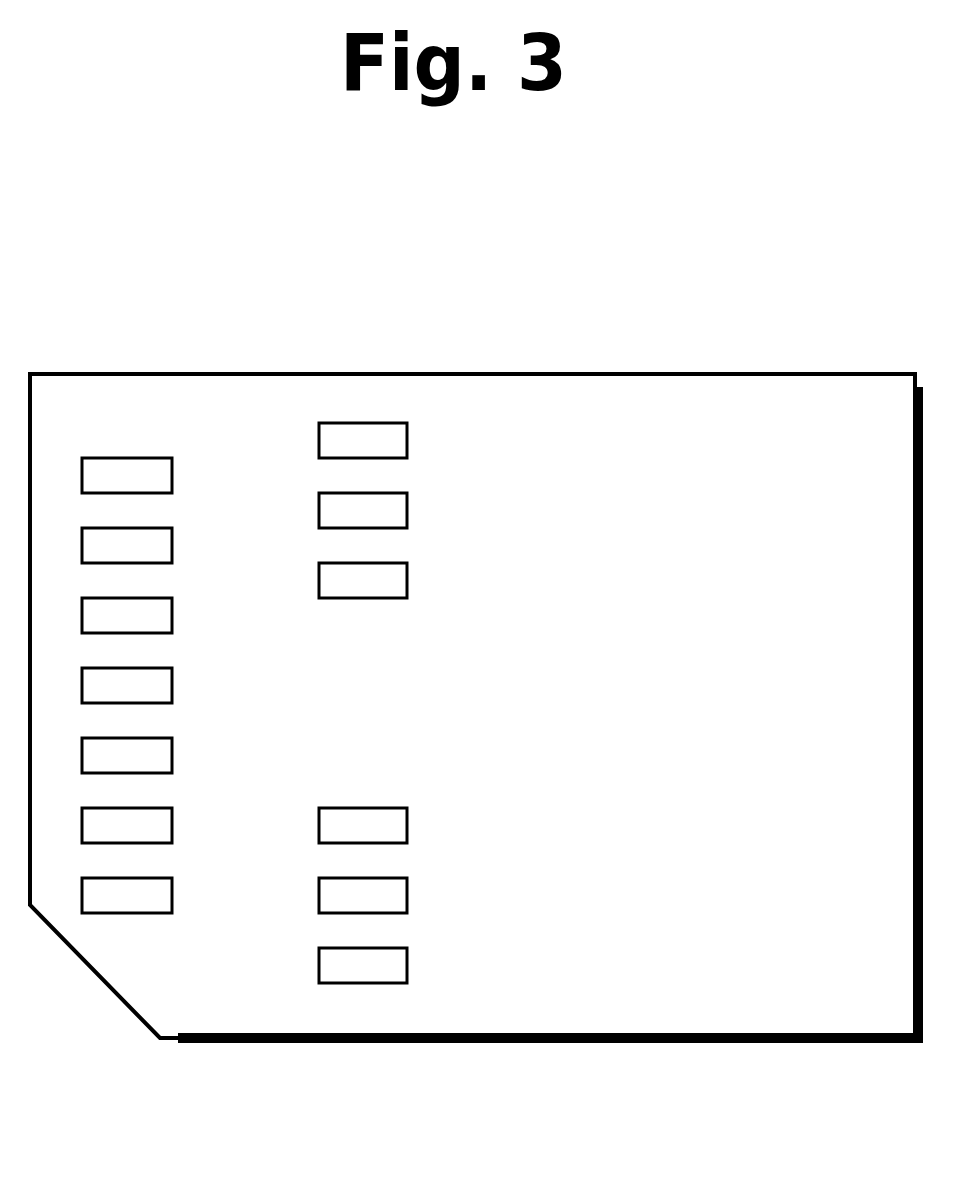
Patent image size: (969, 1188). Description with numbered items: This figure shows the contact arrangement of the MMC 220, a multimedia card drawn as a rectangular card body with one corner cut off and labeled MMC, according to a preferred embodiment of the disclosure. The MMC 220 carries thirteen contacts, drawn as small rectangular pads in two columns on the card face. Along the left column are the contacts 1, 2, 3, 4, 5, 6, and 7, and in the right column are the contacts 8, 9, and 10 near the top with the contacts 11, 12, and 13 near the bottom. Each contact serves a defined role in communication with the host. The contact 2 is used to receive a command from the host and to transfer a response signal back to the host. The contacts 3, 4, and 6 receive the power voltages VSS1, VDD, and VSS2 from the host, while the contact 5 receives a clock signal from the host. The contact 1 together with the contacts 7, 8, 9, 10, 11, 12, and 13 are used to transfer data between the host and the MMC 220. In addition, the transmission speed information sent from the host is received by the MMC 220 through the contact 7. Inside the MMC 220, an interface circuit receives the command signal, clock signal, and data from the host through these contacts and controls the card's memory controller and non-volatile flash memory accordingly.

The MMC 220 is at (833, 372).
The contact 1 is at (172, 476).
The contact 2 is at (172, 546).
The contact 3 is at (172, 616).
The contact 4 is at (172, 686).
The contact 5 is at (172, 756).
The contact 6 is at (172, 826).
The contact 7 is at (172, 896).
The contact 8 is at (407, 440).
The contact 9 is at (407, 510).
The contact 10 is at (407, 580).
The contact 11 is at (407, 826).
The contact 12 is at (407, 896).
The contact 13 is at (407, 966).